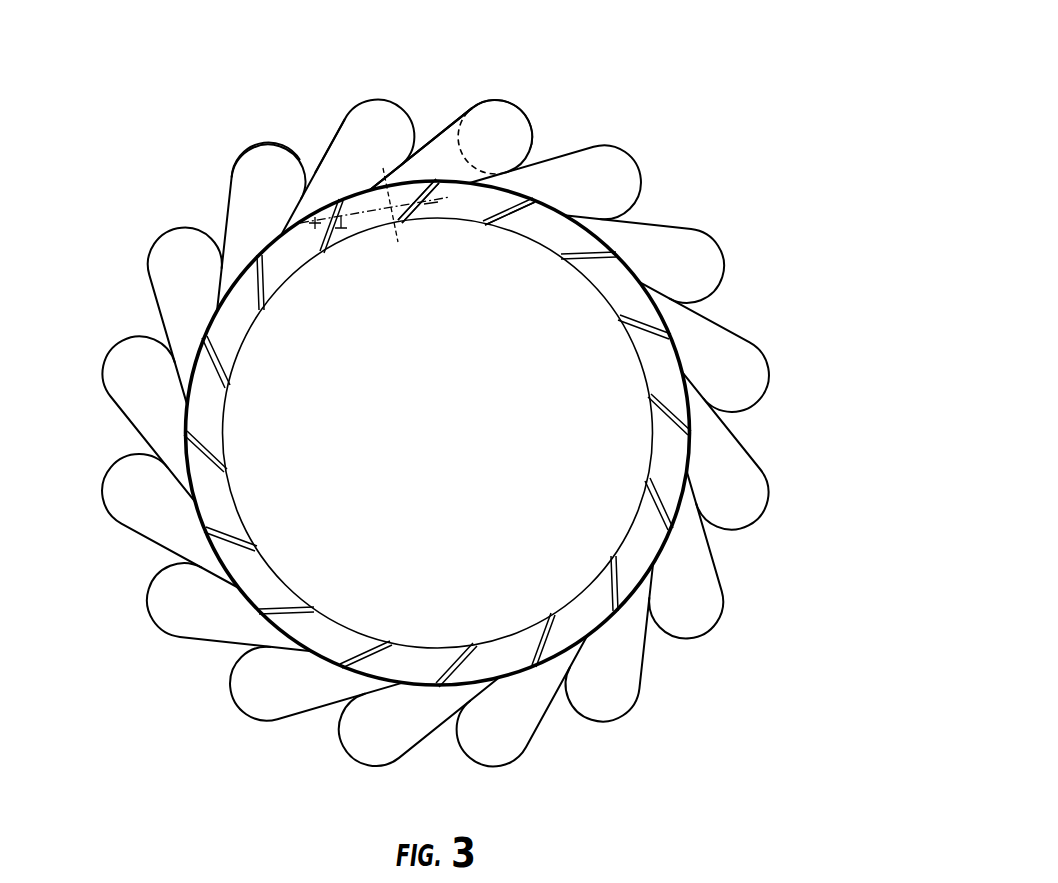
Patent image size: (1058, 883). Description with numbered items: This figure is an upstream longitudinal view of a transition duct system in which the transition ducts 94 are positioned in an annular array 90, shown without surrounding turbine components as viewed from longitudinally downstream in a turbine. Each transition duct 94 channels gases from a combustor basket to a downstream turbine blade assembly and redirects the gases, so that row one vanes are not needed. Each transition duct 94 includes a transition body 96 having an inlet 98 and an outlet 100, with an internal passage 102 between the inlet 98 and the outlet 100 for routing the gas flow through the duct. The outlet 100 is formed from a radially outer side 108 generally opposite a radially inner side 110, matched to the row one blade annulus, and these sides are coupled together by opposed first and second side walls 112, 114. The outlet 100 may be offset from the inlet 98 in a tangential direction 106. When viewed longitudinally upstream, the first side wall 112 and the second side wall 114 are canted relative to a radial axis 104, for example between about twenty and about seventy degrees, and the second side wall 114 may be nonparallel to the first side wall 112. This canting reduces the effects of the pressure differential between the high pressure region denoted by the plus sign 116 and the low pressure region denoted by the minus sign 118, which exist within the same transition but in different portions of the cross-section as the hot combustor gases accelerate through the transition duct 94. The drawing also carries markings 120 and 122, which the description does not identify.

The annular array 90 is at (728, 161).
The transition duct 94 is at (262, 150).
The transition body 96 is at (445, 132).
The inlet 98 is at (527, 117).
The outlet 100 is at (367, 233).
The internal passage 102 is at (493, 143).
The radial axis 104 is at (397, 233).
The tangential direction 106 is at (382, 217).
The radially outer side 108 is at (345, 119).
The radially inner side 110 is at (357, 233).
The first side wall 112 is at (398, 168).
The second side wall 114 is at (340, 215).
The plus sign 116 is at (268, 144).
The minus sign 118 is at (338, 200).
The slot edge 120 is at (473, 213).
The slot edge 122 is at (400, 180).